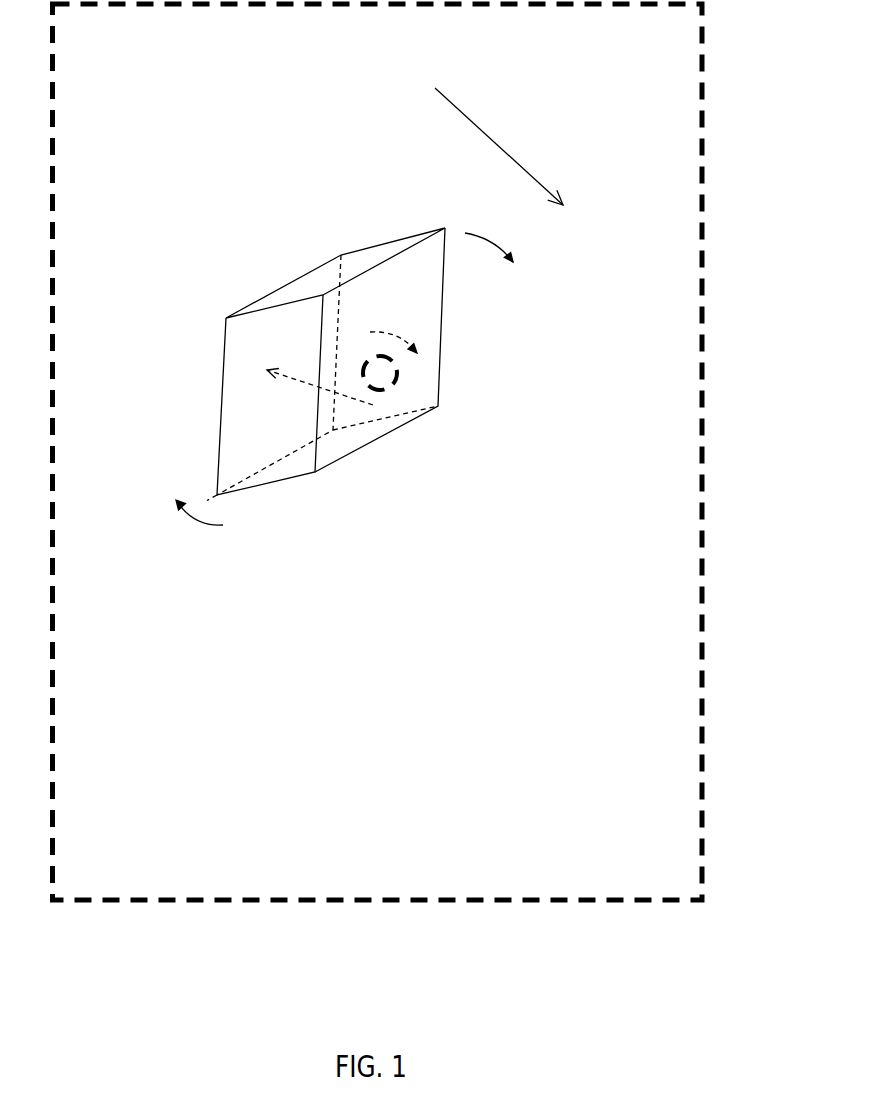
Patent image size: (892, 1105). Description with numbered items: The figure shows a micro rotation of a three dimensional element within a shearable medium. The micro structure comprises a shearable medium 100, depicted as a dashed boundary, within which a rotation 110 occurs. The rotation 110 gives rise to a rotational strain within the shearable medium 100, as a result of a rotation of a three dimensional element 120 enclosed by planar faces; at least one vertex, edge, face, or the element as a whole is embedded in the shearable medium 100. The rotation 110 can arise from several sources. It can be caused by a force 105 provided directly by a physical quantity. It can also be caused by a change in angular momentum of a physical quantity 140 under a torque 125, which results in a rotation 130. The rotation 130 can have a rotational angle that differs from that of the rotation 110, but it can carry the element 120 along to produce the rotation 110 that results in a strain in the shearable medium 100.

The shearable medium 100 is at (703, 610).
The force 105 is at (470, 118).
The rotation 110 is at (483, 232).
The three dimensional element 120 is at (295, 278).
The torque 125 is at (311, 383).
The rotation 130 is at (397, 335).
The physical quantity 140 is at (393, 385).